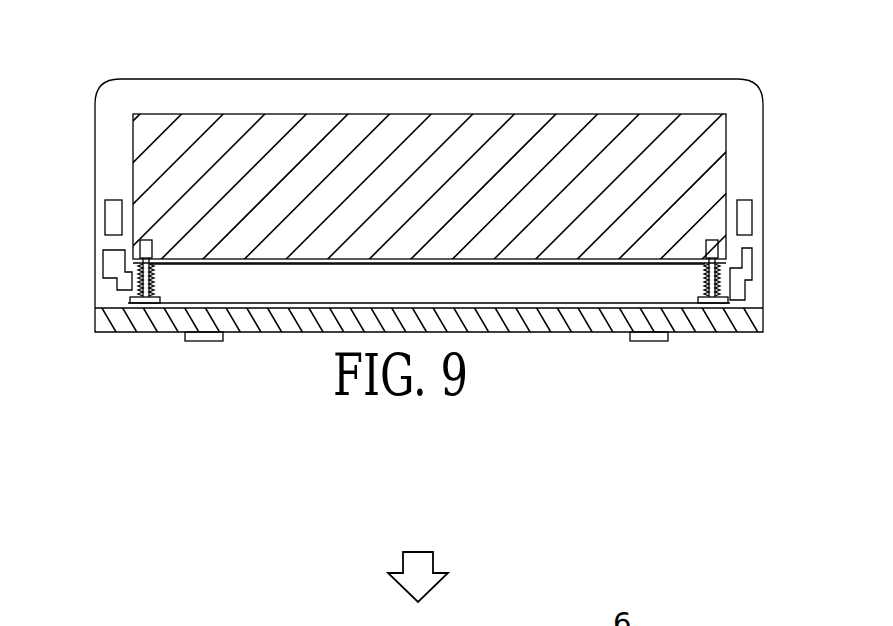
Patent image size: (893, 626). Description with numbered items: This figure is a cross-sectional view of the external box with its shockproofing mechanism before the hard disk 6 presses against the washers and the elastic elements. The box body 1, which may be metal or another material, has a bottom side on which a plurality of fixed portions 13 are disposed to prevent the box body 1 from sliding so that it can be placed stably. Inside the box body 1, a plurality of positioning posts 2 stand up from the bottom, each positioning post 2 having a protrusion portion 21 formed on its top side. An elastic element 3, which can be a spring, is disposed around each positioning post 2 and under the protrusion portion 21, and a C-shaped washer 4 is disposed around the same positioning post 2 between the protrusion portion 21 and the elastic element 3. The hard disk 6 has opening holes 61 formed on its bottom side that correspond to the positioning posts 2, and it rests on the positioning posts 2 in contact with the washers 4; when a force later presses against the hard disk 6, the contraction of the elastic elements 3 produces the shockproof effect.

The box body 1 is at (154, 334).
The positioning post 2 is at (118, 299).
The elastic element 3 is at (112, 287).
The washer 4 is at (725, 260).
The hard disk 6 is at (590, 113).
The fixed portion 13 is at (660, 341).
The protrusion portion 21 is at (128, 256).
The opening hole 61 is at (735, 228).